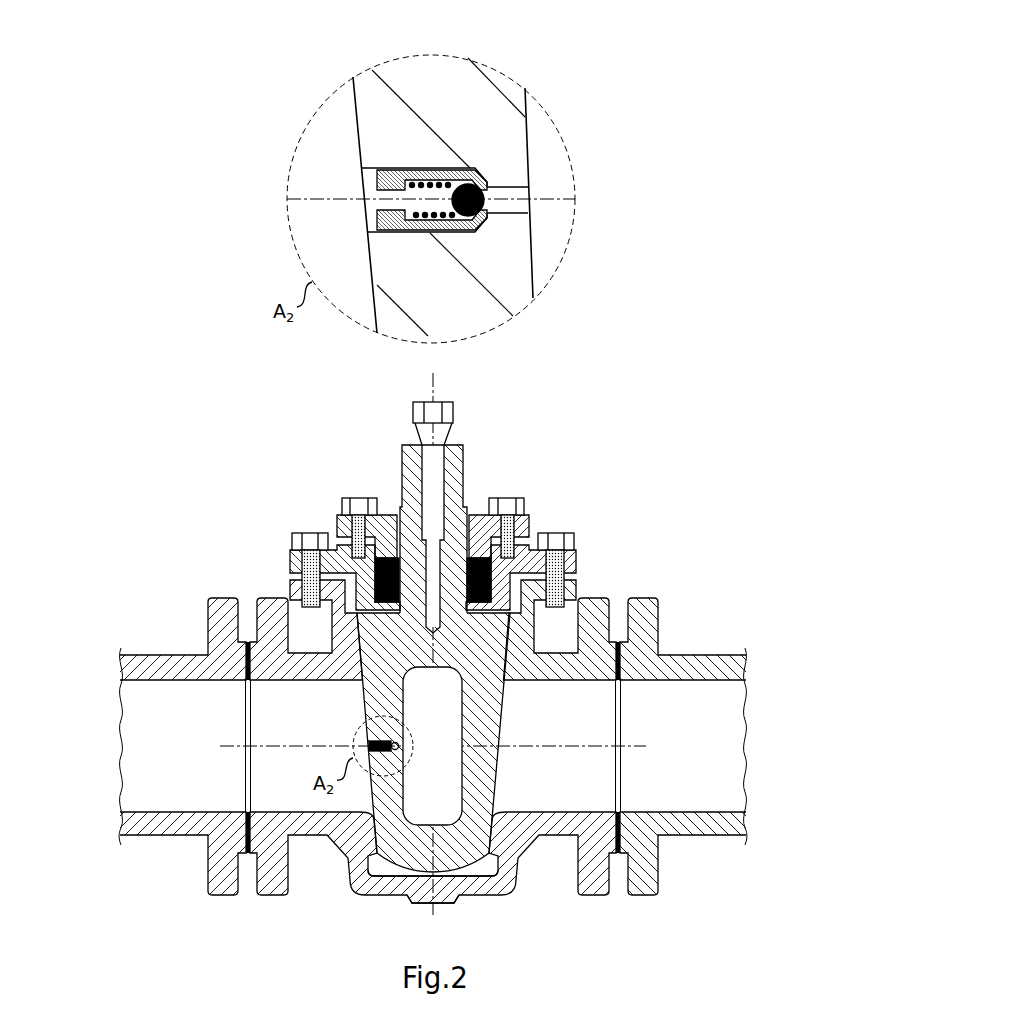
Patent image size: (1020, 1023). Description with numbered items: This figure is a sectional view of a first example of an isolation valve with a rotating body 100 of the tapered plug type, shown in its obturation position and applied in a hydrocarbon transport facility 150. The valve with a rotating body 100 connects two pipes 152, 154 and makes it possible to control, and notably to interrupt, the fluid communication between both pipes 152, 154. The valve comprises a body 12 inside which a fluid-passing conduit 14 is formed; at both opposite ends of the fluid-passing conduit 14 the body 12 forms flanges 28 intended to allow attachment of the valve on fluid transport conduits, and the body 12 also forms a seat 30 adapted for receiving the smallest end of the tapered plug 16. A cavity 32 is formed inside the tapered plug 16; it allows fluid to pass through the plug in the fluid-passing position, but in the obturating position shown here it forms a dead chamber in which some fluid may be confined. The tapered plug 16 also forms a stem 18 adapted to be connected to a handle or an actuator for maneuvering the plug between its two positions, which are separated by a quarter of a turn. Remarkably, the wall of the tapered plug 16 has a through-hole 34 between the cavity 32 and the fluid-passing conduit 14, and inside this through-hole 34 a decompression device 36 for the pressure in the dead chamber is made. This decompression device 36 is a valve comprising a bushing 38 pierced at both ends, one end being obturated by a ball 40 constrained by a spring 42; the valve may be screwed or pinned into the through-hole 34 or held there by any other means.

The valve with a rotating body 100 is at (338, 405).
The hydrocarbon transport facility 150 is at (168, 533).
The pipe 152 is at (177, 656).
The pipe 154 is at (690, 652).
The body 12 is at (272, 608).
The fluid-passing conduit 14 is at (571, 792).
The tapered plug 16 is at (360, 682).
The stem 18 is at (464, 485).
The flanges 28 is at (255, 623).
The seat 30 is at (487, 875).
The cavity 32 is at (461, 711).
The through-hole 34 is at (483, 195).
The decompression device 36 is at (493, 207).
The bushing 38 is at (410, 170).
The ball 40 is at (496, 241).
The spring 42 is at (418, 178).